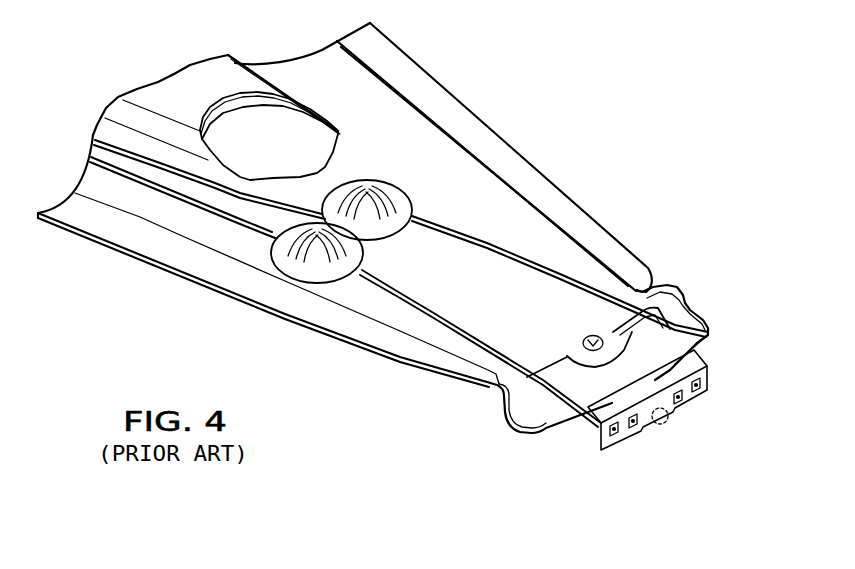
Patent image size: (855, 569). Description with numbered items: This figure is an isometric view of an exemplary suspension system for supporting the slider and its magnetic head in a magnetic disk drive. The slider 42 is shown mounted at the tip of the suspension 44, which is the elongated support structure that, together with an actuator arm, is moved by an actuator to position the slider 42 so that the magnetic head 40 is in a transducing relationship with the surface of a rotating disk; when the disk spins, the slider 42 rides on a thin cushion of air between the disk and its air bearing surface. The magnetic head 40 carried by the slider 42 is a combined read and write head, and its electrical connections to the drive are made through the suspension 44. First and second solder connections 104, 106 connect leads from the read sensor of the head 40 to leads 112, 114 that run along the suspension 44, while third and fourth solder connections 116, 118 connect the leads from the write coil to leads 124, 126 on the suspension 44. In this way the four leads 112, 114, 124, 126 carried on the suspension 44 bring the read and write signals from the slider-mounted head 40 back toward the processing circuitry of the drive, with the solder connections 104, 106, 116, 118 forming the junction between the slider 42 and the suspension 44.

The magnetic head 40 is at (660, 425).
The slider 42 is at (550, 441).
The suspension 44 is at (511, 145).
The first solder connection 104 is at (607, 437).
The second solder connection 106 is at (702, 384).
The lead 112 is at (385, 292).
The lead 114 is at (567, 280).
The third solder connection 116 is at (630, 432).
The fourth solder connection 118 is at (682, 404).
The lead 124 is at (433, 307).
The lead 126 is at (487, 248).